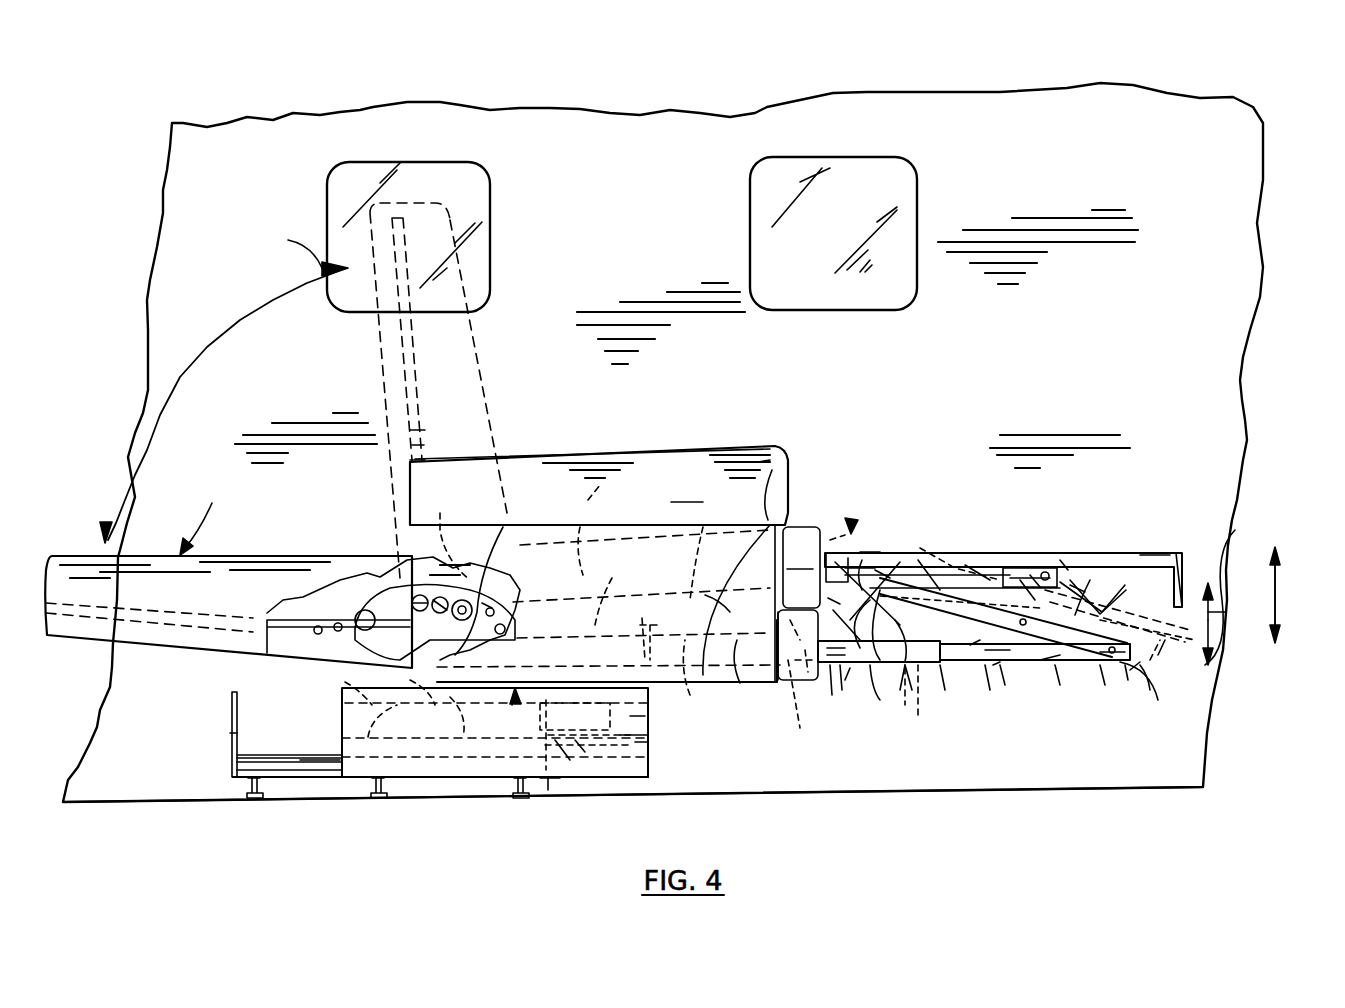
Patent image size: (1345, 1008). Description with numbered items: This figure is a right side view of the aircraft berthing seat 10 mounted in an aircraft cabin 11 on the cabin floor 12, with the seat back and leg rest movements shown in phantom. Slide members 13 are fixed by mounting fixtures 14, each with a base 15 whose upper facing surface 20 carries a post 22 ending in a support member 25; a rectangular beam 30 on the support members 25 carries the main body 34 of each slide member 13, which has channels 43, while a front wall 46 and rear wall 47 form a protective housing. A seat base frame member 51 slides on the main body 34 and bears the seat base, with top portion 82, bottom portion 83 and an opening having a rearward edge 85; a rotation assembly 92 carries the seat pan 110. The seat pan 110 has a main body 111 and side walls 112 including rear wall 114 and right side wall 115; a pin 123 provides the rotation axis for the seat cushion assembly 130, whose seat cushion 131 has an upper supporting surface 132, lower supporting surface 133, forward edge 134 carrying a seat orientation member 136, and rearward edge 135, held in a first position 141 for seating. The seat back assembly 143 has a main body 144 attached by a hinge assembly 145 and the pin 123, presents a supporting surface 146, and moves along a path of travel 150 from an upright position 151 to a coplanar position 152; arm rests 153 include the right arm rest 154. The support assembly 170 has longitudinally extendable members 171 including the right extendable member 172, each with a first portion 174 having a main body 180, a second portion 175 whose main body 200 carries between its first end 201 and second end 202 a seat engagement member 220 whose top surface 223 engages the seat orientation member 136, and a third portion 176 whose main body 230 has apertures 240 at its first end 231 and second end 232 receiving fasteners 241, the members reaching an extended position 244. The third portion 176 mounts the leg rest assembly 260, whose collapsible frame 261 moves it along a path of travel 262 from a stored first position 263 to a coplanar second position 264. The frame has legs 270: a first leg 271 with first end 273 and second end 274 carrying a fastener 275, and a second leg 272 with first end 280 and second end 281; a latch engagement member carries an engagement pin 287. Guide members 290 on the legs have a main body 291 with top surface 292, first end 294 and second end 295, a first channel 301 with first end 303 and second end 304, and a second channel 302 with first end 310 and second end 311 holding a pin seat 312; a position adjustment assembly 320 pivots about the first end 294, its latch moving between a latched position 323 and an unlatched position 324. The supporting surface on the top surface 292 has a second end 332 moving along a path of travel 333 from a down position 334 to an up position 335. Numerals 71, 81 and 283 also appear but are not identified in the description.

The aircraft berthing seat 10 is at (827, 428).
The aircraft cabin 11 is at (1115, 266).
The cabin floor 12 is at (738, 795).
The slide members 13 is at (298, 775).
The mounting fixtures 14 is at (225, 782).
The base 15 is at (548, 780).
The upper facing surface 20 is at (240, 796).
The post 22 is at (385, 790).
The support member 25 is at (520, 790).
The rectangular beam 30 is at (257, 770).
The main body 34 is at (273, 748).
The rectangular-shaped channels 43 is at (318, 758).
The front wall 46 is at (560, 725).
The rear wall 47 is at (230, 733).
The seat base frame member 51 is at (455, 705).
The latch plate 71 is at (645, 716).
The pivot link 81 is at (495, 721).
The top portion 82 is at (345, 682).
The bottom portion 83 is at (512, 705).
The rearward edge 85 is at (410, 680).
The rotation or adjustment assembly 92 is at (645, 742).
The seat pan 110 is at (745, 688).
The main body 111 is at (690, 695).
The side walls 112 is at (740, 683).
The rear wall 114 is at (380, 618).
The right side wall 115 is at (768, 520).
The fastener or pin 123 is at (503, 527).
The seat cushion assembly 130 is at (633, 520).
The seat cushion 131 is at (703, 527).
The upper supporting surface 132 is at (580, 527).
The lower supporting surface 133 is at (612, 578).
The forward edge 134 is at (780, 570).
The rearward edge 135 is at (440, 513).
The seat orientation member 136 is at (799, 603).
The first position 141 is at (850, 530).
The seat back assembly 143 is at (206, 517).
The main body 144 is at (138, 580).
The hinge assembly 145 is at (487, 608).
The supporting surface 146 is at (487, 330).
The path of travel 150 is at (200, 357).
The first or upright position 151 is at (300, 252).
The second or coplanar position 152 is at (104, 518).
The arm rests 153 is at (687, 493).
The right arm rest 154 is at (758, 462).
The support assembly 170 is at (985, 665).
The longitudinally extendable members 171 is at (1125, 665).
The right extendable member 172 is at (1100, 665).
The first portion 174 is at (795, 705).
The second portion 175 is at (940, 665).
The third portion 176 is at (1140, 665).
The main body 180 is at (705, 595).
The main body 200 is at (870, 665).
The first end 201 is at (642, 618).
The second end 202 is at (775, 612).
The seat engagement member 220 is at (845, 680).
The top surface 223 is at (875, 570).
The main body 230 is at (1000, 665).
The first end 231 is at (970, 645).
The second end 232 is at (1125, 668).
The apertures 240 is at (990, 665).
The fasteners 241 is at (930, 670).
The second, extended position 244 is at (1236, 591).
The leg rest assembly 260 is at (1130, 520).
The collapsible frame 261 is at (1140, 555).
The path of travel 262 is at (1276, 605).
The first position 263 is at (1277, 640).
The second position 264 is at (1276, 548).
The legs 270 is at (1120, 612).
The first leg 271 is at (905, 665).
The second leg 272 is at (1150, 630).
The first end 273 is at (920, 665).
The second end 274 is at (920, 548).
The fastener 275 is at (895, 620).
The first end 280 is at (1158, 655).
The second end 281 is at (1090, 588).
The pivot 283 is at (1070, 585).
The engagement pin 287 is at (918, 560).
The guide members 290 is at (960, 610).
The main body 291 is at (1040, 660).
The top surface 292 is at (1020, 580).
The first end 294 is at (862, 560).
The second end 295 is at (1090, 580).
The first channel 301 is at (974, 640).
The second channel 302 is at (1055, 665).
The first end 303 is at (965, 565).
The second end 304 is at (848, 598).
The first end 310 is at (1080, 610).
The second end 311 is at (1030, 575).
The pin seat 312 is at (1060, 560).
The position adjustment assembly 320 is at (870, 552).
The first latched position 323 is at (828, 598).
The second unlatched position 324 is at (830, 540).
The second end 332 is at (1180, 555).
The path of travel 333 is at (1208, 612).
The first position 334 is at (1210, 650).
The second, up position 335 is at (1208, 585).